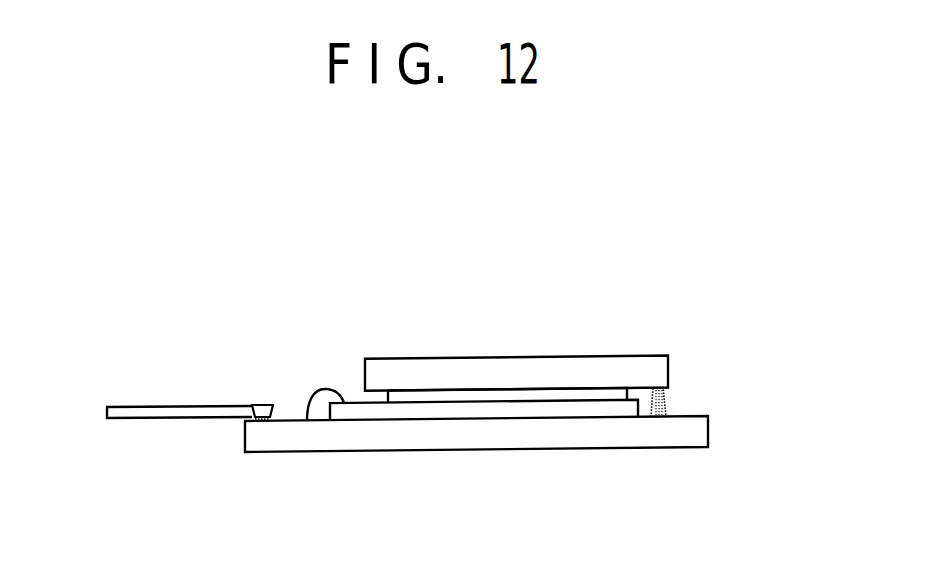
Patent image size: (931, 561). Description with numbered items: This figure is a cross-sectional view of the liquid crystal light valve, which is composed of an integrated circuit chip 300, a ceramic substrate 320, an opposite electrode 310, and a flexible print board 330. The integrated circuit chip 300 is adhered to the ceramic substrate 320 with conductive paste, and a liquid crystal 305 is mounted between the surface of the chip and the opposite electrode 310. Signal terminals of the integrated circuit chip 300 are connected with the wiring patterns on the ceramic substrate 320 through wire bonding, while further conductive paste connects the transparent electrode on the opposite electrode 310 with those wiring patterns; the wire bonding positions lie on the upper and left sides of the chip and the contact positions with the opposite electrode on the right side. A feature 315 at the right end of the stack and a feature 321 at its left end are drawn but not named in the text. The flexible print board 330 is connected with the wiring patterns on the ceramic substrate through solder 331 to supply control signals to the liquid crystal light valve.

The integrated circuit chip 300 is at (560, 407).
The liquid crystal 305 is at (468, 392).
The opposite electrode 310 is at (403, 360).
The solder bump 315 is at (665, 410).
The ceramic substrate 320 is at (325, 442).
The wire / bump 321 is at (313, 393).
The flexible print board 330 is at (160, 406).
The solder 331 is at (258, 407).